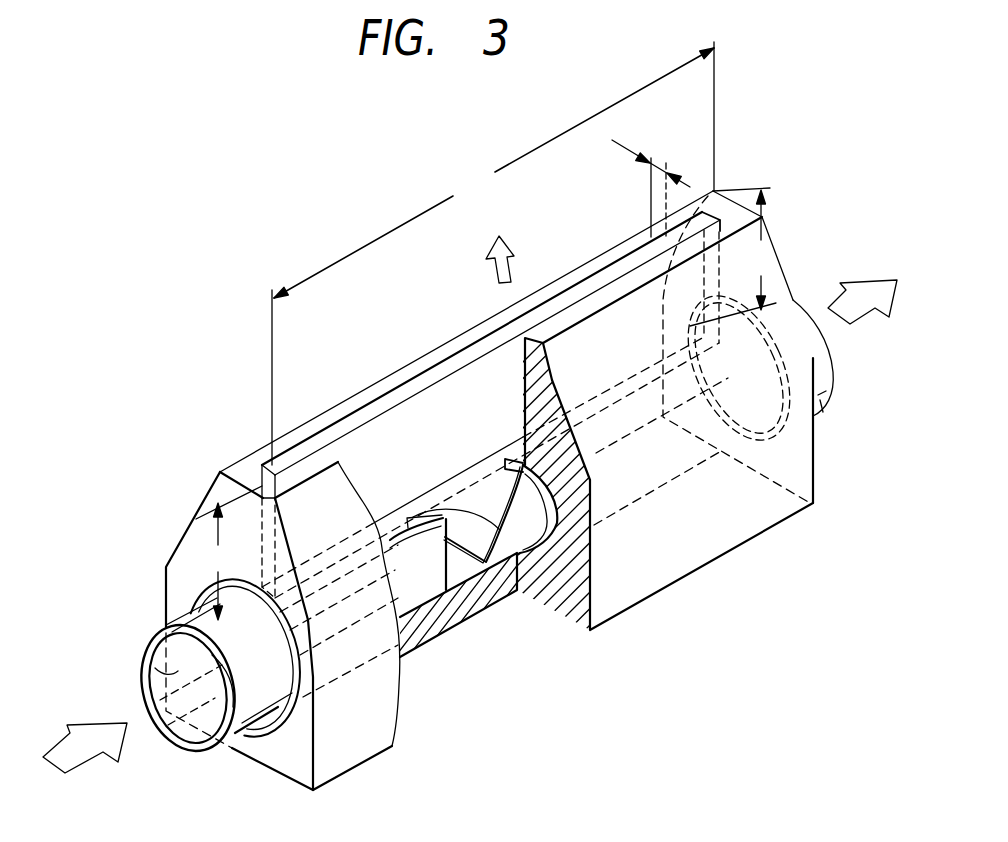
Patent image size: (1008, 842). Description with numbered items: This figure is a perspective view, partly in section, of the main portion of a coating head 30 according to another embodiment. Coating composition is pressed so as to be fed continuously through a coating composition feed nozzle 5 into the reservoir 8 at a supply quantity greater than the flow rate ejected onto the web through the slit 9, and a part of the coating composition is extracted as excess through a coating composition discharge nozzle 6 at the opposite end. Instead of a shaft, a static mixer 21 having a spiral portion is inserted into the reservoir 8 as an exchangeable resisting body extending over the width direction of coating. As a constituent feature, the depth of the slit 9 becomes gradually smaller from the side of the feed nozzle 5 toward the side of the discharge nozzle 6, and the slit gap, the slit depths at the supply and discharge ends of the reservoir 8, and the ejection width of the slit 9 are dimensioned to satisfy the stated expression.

The coating head 30 is at (250, 414).
The slit 9 is at (602, 282).
The coating composition feed nozzle 5 is at (152, 664).
The coating composition discharge nozzle 6 is at (822, 404).
The reservoir 8 is at (484, 488).
The static mixer 21 is at (431, 572).